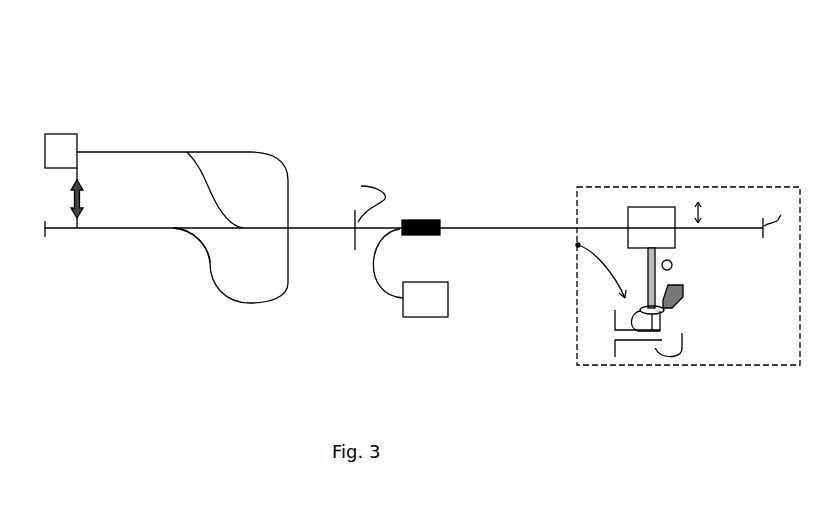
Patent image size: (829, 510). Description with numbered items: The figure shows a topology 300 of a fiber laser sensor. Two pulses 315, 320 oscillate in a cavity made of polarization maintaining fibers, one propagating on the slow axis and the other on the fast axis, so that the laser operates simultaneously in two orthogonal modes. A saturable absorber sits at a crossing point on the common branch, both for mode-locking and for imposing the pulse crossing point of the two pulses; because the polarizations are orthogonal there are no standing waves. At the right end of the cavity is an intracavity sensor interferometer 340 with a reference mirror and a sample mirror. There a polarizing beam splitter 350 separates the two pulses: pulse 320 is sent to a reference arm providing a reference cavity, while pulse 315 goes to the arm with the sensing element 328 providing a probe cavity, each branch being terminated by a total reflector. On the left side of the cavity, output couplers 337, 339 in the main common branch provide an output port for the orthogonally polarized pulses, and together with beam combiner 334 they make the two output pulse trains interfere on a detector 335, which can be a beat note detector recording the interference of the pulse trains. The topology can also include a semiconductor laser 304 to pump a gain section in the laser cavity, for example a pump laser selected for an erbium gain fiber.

The topology 300 is at (150, 65).
The detector D 335 is at (57, 133).
The pulse 320 is at (88, 209).
The beam combiner 334 is at (187, 152).
The output coupler 337 is at (217, 187).
The output coupler 339 is at (210, 253).
The semiconductor laser SL 304 is at (397, 236).
The intracavity sensor interferometer 340 is at (572, 200).
The polarizing beam splitter P 350 is at (660, 214).
The pulse 315 is at (684, 297).
The sensing element 328 is at (642, 332).